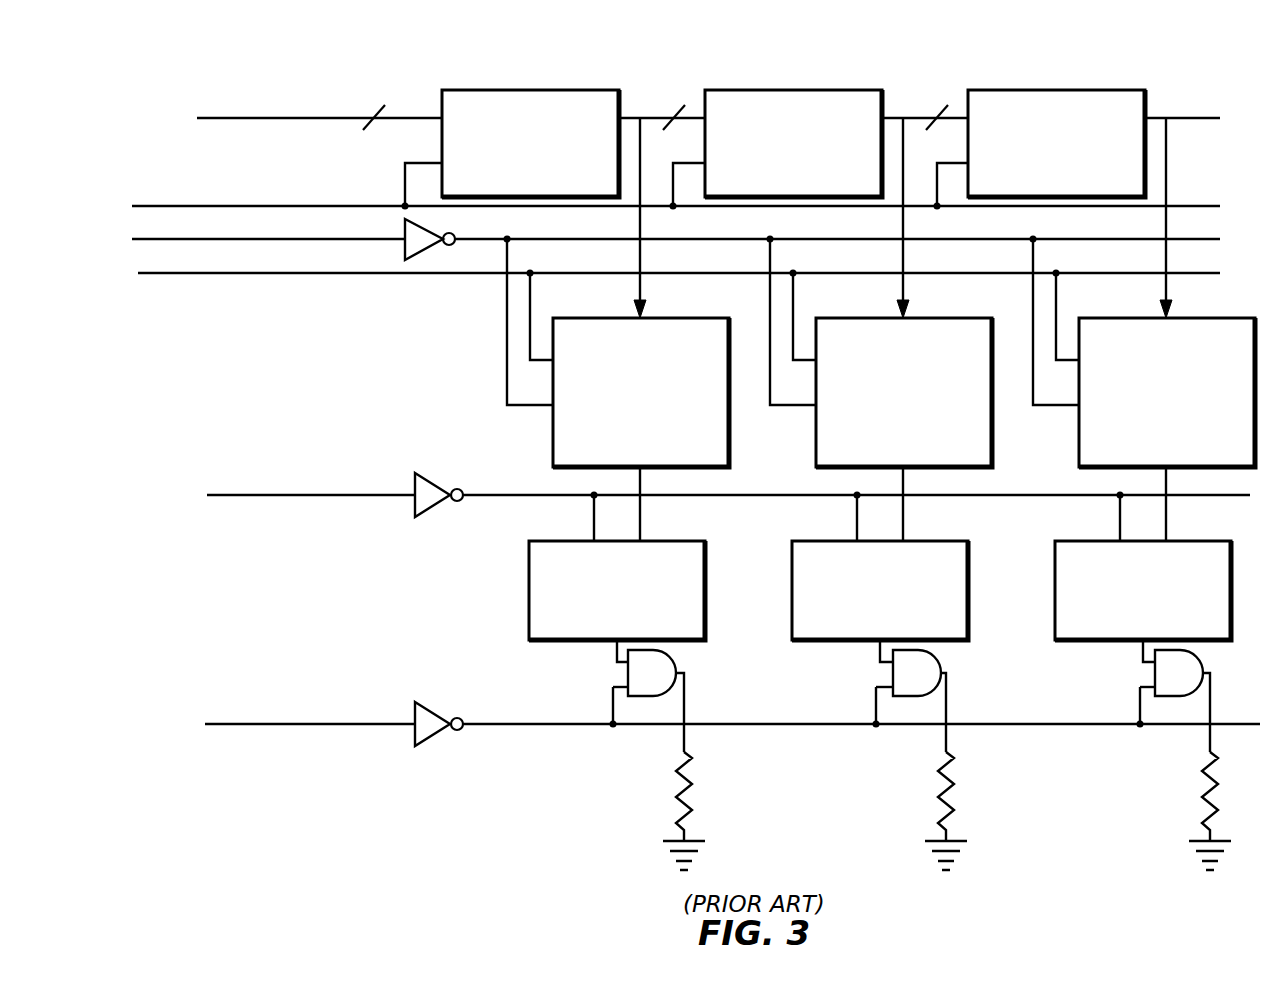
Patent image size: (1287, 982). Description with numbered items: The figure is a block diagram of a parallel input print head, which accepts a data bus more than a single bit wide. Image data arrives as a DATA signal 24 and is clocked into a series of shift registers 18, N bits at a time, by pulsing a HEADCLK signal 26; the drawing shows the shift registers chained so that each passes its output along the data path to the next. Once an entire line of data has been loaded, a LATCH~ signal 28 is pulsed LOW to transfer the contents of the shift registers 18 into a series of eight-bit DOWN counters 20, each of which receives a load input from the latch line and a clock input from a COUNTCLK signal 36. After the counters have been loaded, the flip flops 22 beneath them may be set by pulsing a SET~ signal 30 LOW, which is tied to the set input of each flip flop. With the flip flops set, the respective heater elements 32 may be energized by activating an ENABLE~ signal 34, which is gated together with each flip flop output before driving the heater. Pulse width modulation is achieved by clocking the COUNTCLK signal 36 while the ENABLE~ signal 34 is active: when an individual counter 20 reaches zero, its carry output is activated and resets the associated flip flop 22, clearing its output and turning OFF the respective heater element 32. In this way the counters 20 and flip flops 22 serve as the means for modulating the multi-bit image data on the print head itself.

The shift register 18 is at (592, 90).
The 8-bit DOWN counter 20 is at (553, 435).
The flip flop 22 is at (529, 617).
The DATA signal 24 is at (322, 117).
The HEADCLK signal 26 is at (140, 206).
The LATCH~ signal 28 is at (145, 239).
The SET~ signal 30 is at (343, 494).
The heater element 32 is at (678, 781).
The ENABLE~ signal 34 is at (270, 725).
The COUNTCLK signal 36 is at (145, 273).